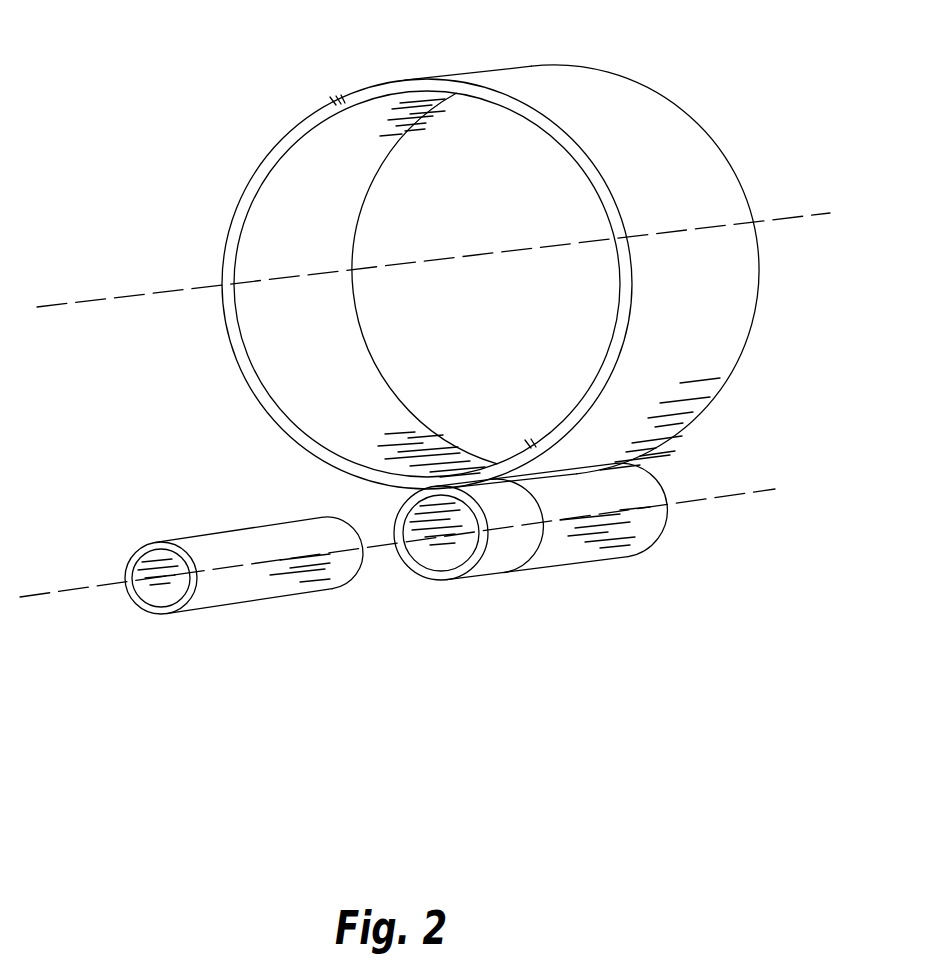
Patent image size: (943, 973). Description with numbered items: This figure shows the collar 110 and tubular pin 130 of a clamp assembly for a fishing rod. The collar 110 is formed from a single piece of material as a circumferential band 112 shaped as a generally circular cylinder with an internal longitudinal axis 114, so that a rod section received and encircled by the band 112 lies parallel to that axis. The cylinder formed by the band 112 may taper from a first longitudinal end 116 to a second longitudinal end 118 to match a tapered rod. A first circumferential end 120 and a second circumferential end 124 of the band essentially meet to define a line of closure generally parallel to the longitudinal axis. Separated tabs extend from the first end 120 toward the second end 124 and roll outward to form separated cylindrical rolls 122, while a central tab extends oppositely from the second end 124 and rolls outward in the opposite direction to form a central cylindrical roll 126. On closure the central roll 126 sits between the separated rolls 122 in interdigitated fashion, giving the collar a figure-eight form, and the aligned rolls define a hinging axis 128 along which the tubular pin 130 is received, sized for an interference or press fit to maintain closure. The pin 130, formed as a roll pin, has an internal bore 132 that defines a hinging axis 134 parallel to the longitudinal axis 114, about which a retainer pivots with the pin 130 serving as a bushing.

The collar 110 is at (726, 105).
The circumferential band 112 is at (700, 292).
The longitudinal axis 114 is at (70, 303).
The first longitudinal end 116 is at (277, 160).
The second longitudinal end 118 is at (590, 64).
The first circumferential end 120 is at (372, 468).
The separated cylindrical rolls 122 is at (670, 507).
The second circumferential end 124 is at (480, 460).
The central cylindrical roll 126 is at (553, 548).
The hinging axis 128 is at (376, 543).
The tubular pin 130 is at (205, 590).
The internal bore 132 is at (118, 562).
The hinging axis 134 is at (37, 598).